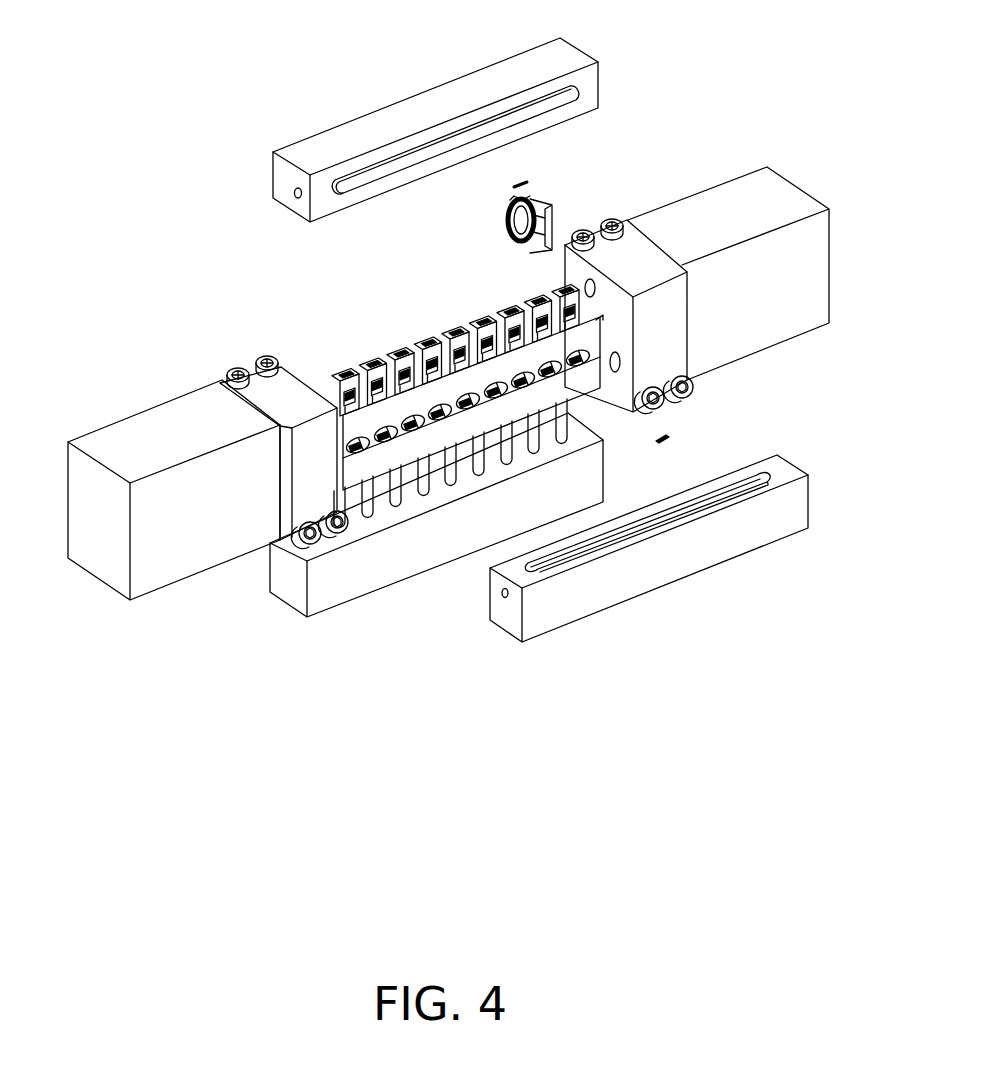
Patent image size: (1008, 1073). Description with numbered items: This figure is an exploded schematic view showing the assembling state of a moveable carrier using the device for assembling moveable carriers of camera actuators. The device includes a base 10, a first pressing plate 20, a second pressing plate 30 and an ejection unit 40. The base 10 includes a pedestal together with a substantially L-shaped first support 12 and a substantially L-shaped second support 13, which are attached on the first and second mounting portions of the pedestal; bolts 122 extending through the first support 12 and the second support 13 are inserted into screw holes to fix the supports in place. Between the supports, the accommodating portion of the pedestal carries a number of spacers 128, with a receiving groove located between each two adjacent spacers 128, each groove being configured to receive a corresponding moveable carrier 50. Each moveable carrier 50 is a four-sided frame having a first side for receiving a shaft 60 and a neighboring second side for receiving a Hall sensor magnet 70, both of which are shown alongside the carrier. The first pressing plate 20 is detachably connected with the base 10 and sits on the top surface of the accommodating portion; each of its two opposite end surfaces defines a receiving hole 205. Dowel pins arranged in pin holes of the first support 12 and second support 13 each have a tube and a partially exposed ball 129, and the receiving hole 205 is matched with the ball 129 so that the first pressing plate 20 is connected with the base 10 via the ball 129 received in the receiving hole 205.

The base 10 is at (770, 198).
The first support 12 is at (643, 262).
The second support 13 is at (288, 403).
The first pressing plate 20 is at (415, 112).
The second pressing plate 30 is at (575, 595).
The ejection unit 40 is at (355, 573).
The moveable carrier 50 is at (550, 223).
The shaft 60 is at (523, 178).
The Hall sensor magnet 70 is at (665, 438).
The bolts 122 is at (668, 375).
The spacers 128 is at (392, 363).
The ball 129 is at (583, 284).
The receiving hole 205 is at (492, 597).